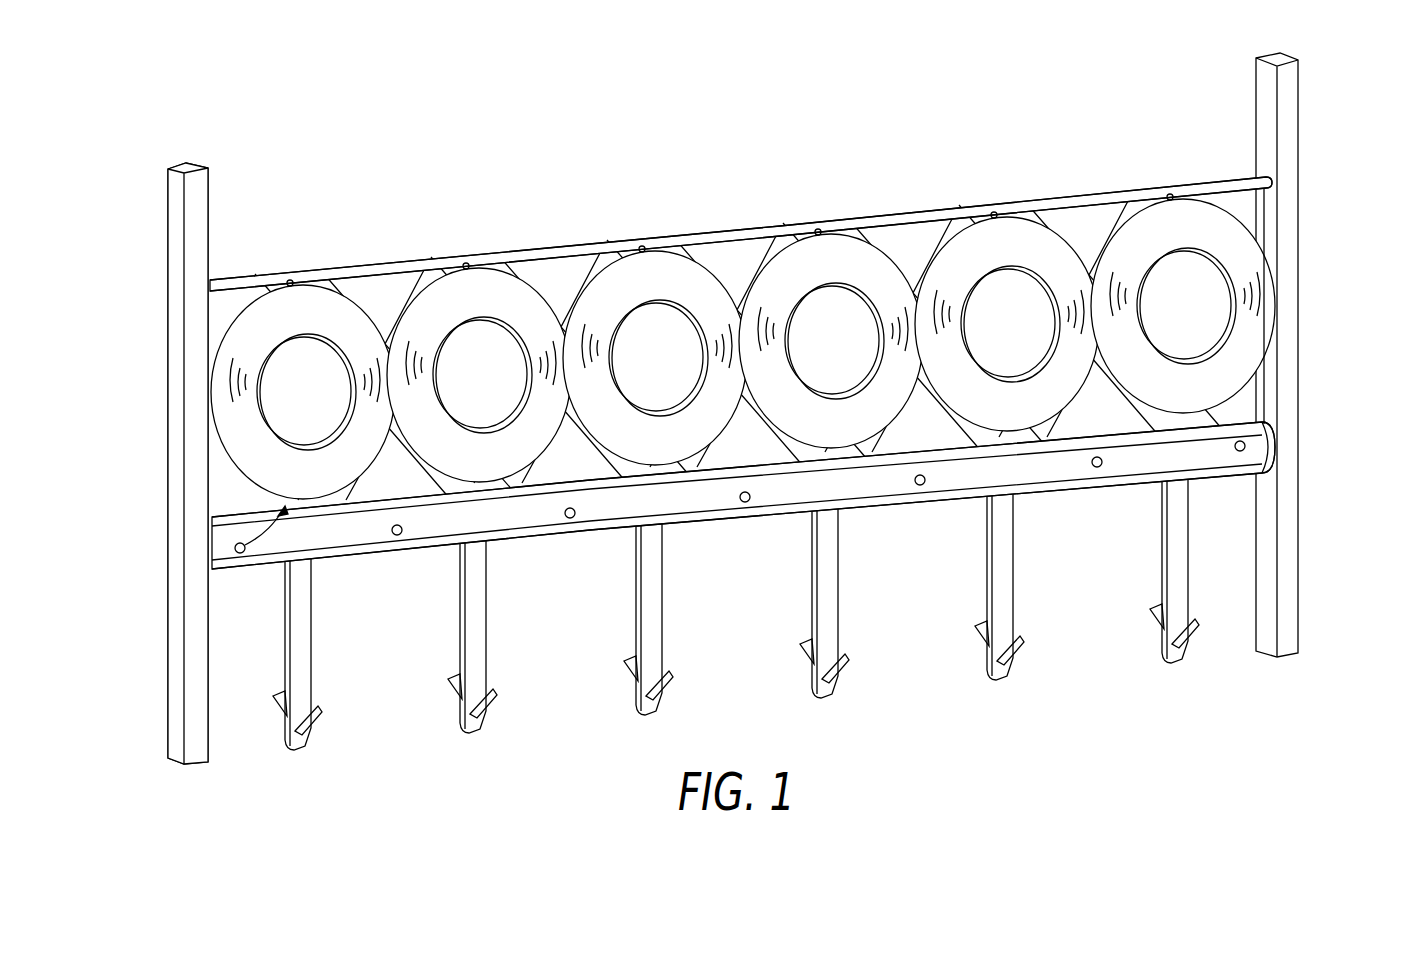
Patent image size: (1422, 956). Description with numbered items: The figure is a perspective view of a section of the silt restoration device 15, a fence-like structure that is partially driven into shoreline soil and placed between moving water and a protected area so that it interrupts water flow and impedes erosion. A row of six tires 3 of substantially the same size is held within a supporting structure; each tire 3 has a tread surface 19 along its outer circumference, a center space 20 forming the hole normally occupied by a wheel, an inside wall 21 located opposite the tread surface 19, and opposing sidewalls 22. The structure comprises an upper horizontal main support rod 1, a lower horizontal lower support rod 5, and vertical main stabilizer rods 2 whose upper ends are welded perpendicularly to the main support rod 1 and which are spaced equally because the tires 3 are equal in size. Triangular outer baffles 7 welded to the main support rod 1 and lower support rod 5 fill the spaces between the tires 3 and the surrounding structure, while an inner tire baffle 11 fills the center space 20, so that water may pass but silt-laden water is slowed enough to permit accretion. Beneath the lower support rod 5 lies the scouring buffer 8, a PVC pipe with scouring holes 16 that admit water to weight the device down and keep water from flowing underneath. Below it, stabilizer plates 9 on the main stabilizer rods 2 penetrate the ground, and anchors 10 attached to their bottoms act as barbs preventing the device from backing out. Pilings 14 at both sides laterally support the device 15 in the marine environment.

The main support rod 1 is at (377, 268).
The main stabilizer rod 2 is at (292, 281).
The tire 3 is at (660, 272).
The lower support rod 5 is at (685, 539).
The outer baffle 7 is at (910, 246).
The scouring buffer 8 is at (431, 526).
The stabilizer plate 9 is at (736, 613).
The anchor 10 is at (492, 694).
The inner tire baffle 11 is at (1170, 296).
The piling 14 is at (1283, 130).
The silt restoration device 15 is at (754, 408).
The scouring hole 16 is at (570, 520).
The tread surface 19 is at (235, 548).
The center space 20 is at (299, 363).
The inside wall 21 is at (225, 419).
The sidewall 22 is at (245, 395).